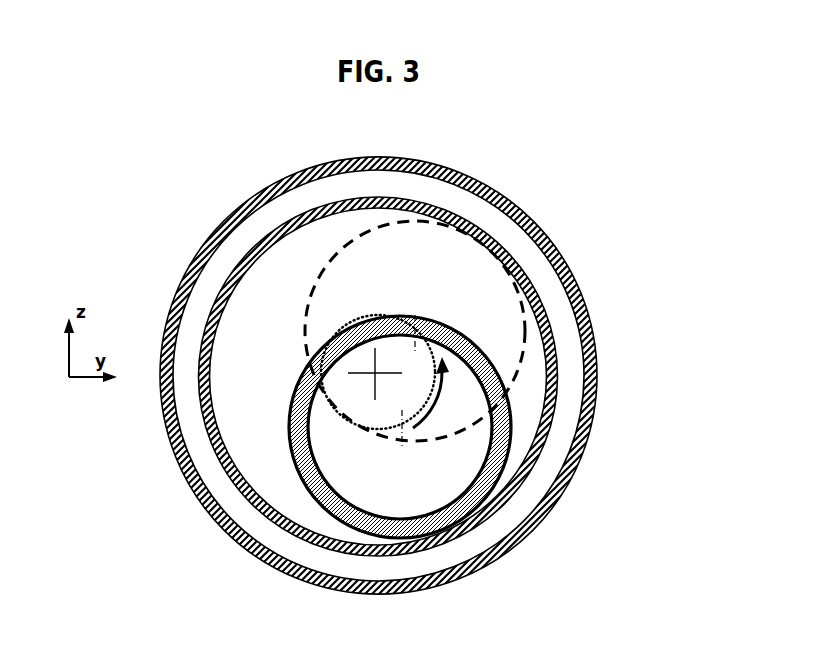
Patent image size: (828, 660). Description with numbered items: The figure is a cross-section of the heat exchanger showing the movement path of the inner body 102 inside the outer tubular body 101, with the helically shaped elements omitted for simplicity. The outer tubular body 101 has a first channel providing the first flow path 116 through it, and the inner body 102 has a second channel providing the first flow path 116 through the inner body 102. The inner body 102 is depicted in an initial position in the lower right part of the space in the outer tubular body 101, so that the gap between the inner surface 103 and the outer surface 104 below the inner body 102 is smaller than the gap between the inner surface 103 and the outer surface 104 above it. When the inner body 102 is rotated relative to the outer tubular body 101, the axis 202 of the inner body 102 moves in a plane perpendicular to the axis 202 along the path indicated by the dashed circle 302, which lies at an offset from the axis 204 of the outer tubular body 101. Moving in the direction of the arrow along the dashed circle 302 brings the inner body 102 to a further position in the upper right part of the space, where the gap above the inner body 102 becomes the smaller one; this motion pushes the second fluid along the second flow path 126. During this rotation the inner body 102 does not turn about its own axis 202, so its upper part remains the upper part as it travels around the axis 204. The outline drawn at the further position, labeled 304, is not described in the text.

The outer tubular body 101 is at (203, 278).
The inner body 102 is at (510, 478).
The inner surface 103 is at (237, 478).
The outer surface 104 is at (513, 432).
The first flow path 116 is at (417, 188).
The second flow path 126 is at (297, 266).
The axis of the inner body 202 is at (327, 518).
The axis of the outer tubular body 204 is at (368, 367).
The dashed circle 302 is at (445, 372).
The offset position of inner tube 304 is at (520, 293).